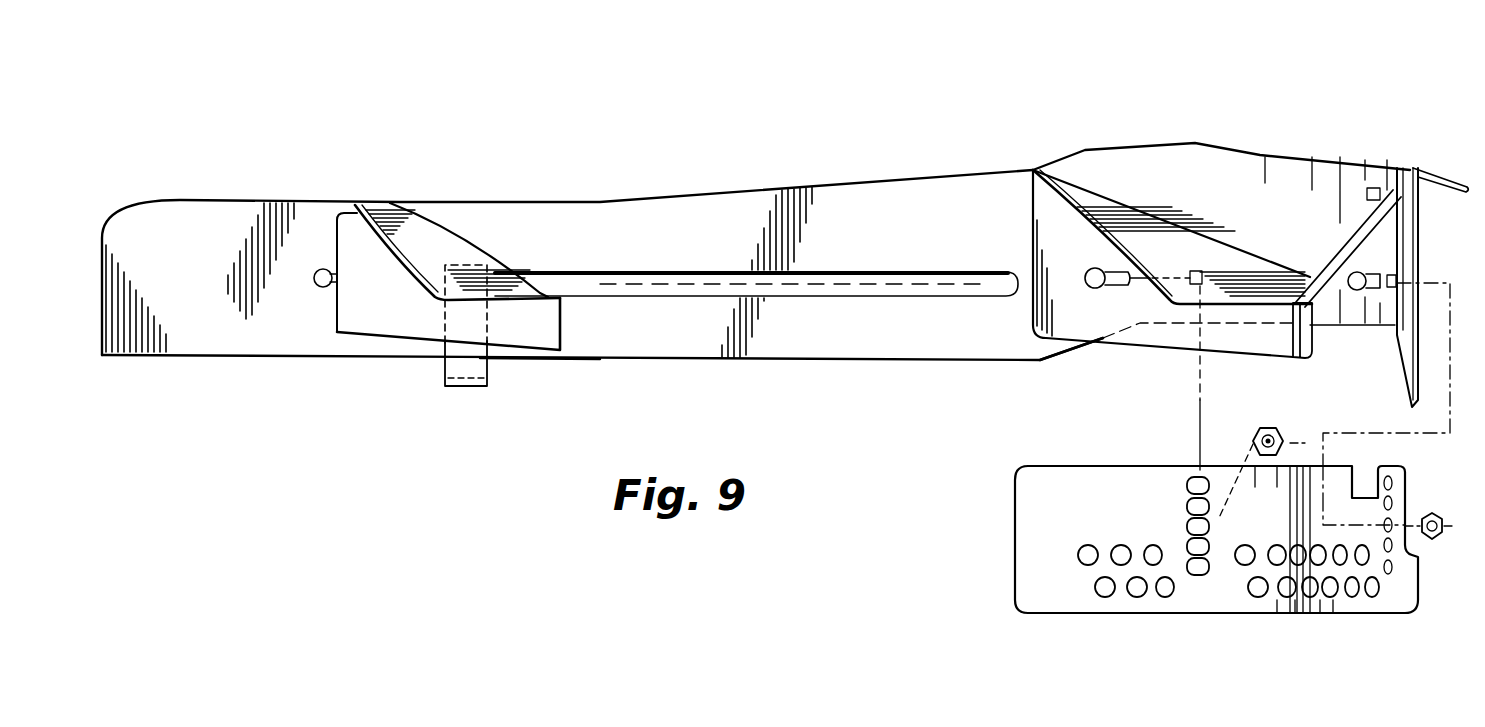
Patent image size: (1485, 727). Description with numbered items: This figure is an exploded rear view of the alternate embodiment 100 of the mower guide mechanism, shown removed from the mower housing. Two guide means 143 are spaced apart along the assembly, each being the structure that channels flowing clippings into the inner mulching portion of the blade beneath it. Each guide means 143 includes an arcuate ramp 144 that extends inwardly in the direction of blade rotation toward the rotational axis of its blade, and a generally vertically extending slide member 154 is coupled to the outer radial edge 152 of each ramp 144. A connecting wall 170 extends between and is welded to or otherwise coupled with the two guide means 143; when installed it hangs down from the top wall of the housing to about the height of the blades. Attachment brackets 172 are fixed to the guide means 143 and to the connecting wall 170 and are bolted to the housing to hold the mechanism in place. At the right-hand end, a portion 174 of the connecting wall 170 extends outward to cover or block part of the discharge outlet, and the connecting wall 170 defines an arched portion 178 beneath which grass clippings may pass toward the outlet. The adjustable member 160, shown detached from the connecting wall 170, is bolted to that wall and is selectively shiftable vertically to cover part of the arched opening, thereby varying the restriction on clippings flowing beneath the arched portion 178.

The alternate embodiment 100 is at (911, 116).
The guide means 143 is at (520, 378).
The arcuate ramp 144 is at (430, 233).
The outer radial edge 152 is at (488, 254).
The slide member 154 is at (400, 332).
The adjustable member 160 is at (1072, 614).
The connecting wall 170 is at (848, 358).
The attachment brackets 172 is at (480, 389).
The portion of connecting wall 174 is at (1355, 148).
The arched portion 178 is at (1356, 326).